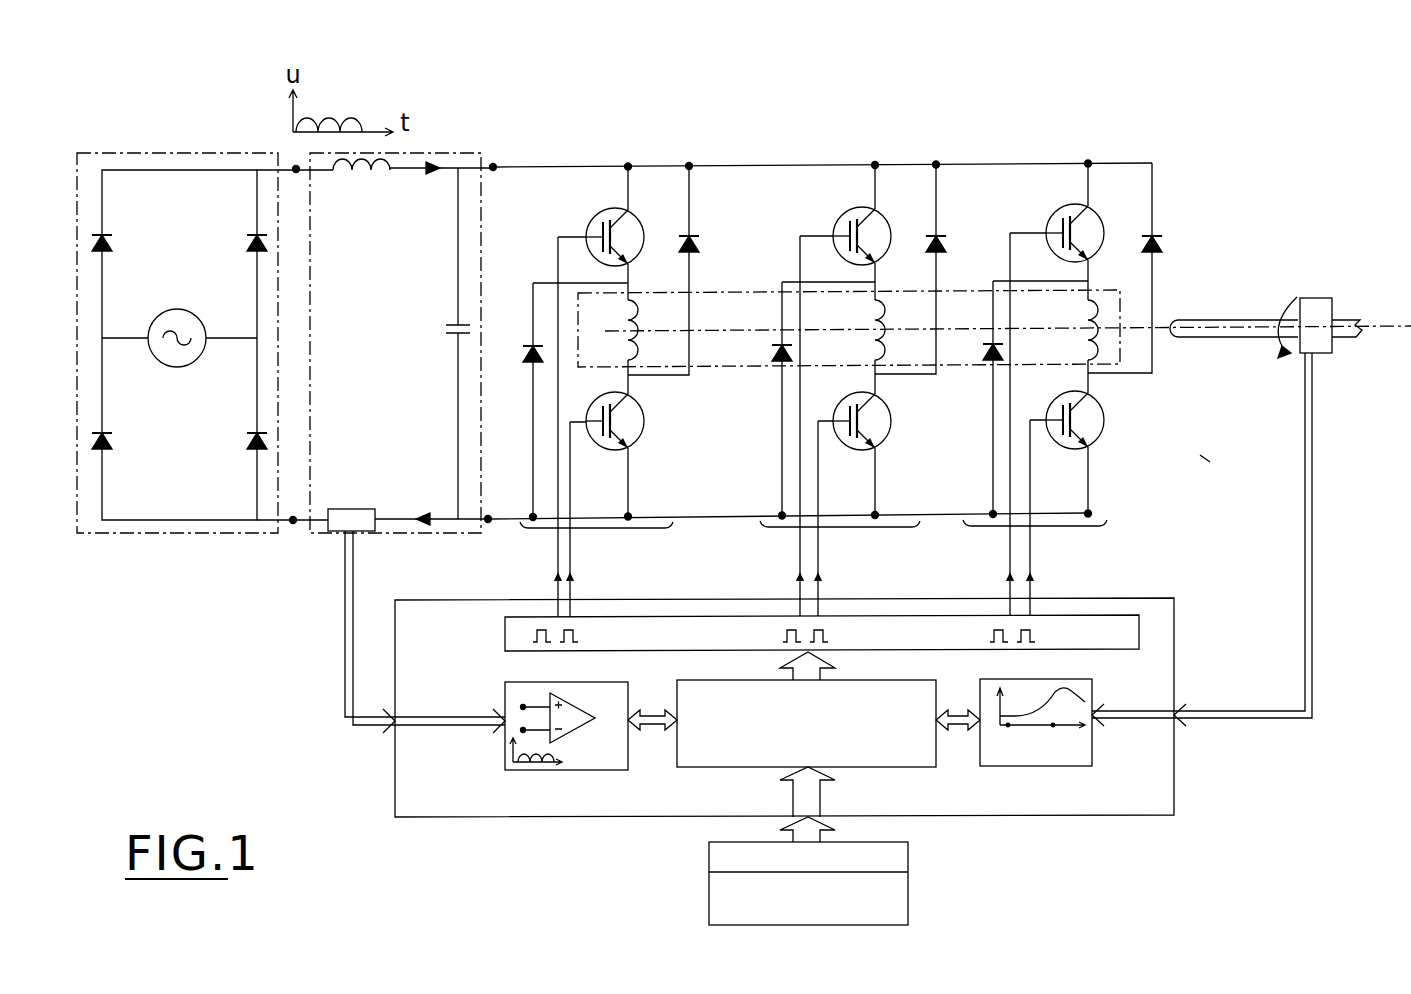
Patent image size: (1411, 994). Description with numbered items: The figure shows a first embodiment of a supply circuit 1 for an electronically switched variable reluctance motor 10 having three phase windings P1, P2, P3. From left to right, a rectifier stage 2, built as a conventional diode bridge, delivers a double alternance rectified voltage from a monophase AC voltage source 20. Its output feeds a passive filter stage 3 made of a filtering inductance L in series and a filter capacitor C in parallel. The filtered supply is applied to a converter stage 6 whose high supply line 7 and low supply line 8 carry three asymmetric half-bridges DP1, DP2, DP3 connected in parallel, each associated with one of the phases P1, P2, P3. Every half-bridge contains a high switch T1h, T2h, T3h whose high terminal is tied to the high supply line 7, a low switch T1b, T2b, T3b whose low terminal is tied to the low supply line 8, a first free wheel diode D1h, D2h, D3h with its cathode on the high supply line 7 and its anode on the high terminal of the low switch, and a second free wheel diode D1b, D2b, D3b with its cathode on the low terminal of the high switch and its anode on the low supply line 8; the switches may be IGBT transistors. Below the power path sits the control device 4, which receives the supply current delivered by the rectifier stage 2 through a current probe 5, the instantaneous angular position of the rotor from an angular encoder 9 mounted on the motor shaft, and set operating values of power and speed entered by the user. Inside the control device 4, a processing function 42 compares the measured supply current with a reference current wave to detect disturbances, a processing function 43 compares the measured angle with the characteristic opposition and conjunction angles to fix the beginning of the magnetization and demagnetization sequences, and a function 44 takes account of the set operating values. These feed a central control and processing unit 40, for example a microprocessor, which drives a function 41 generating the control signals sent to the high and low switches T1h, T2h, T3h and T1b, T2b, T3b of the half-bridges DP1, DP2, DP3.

The supply circuit 1 is at (1212, 460).
The rectifier stage 2 is at (154, 543).
The filter stage 3 is at (404, 539).
The control device 4 is at (1181, 798).
The current probe 5 is at (337, 534).
The converter stage 6 is at (739, 514).
The high supply line 7 is at (780, 164).
The low supply line 8 is at (703, 517).
The angular encoder 9 is at (1320, 298).
The variable reluctance motor 10 is at (1131, 305).
The monophase AC voltage source 20 is at (177, 309).
The central control and processing unit 40 is at (673, 756).
The control signal generation function 41 is at (1128, 609).
The supply current processing function 42 is at (570, 772).
The angular measurement processing function 43 is at (1080, 767).
The operating values function 44 is at (908, 888).
The filtering inductance L is at (370, 181).
The filter capacitor C is at (452, 343).
The high switch T1h is at (592, 218).
The low switch T1b is at (592, 448).
The high switch T2h is at (838, 218).
The low switch T2b is at (833, 444).
The high switch T3h is at (1055, 216).
The low switch T3b is at (1045, 438).
The first free wheel diode D1h is at (700, 245).
The second free wheel diode D1b is at (528, 367).
The first free wheel diode D2h is at (942, 232).
The second free wheel diode D2b is at (772, 364).
The first free wheel diode D3h is at (1160, 233).
The second free wheel diode D3b is at (981, 364).
The phase winding P1 is at (639, 334).
The phase winding P2 is at (884, 336).
The phase winding P3 is at (1105, 371).
The asymmetric half-bridge DP1 is at (593, 533).
The asymmetric half-bridge DP2 is at (839, 533).
The asymmetric half-bridge DP3 is at (1037, 533).